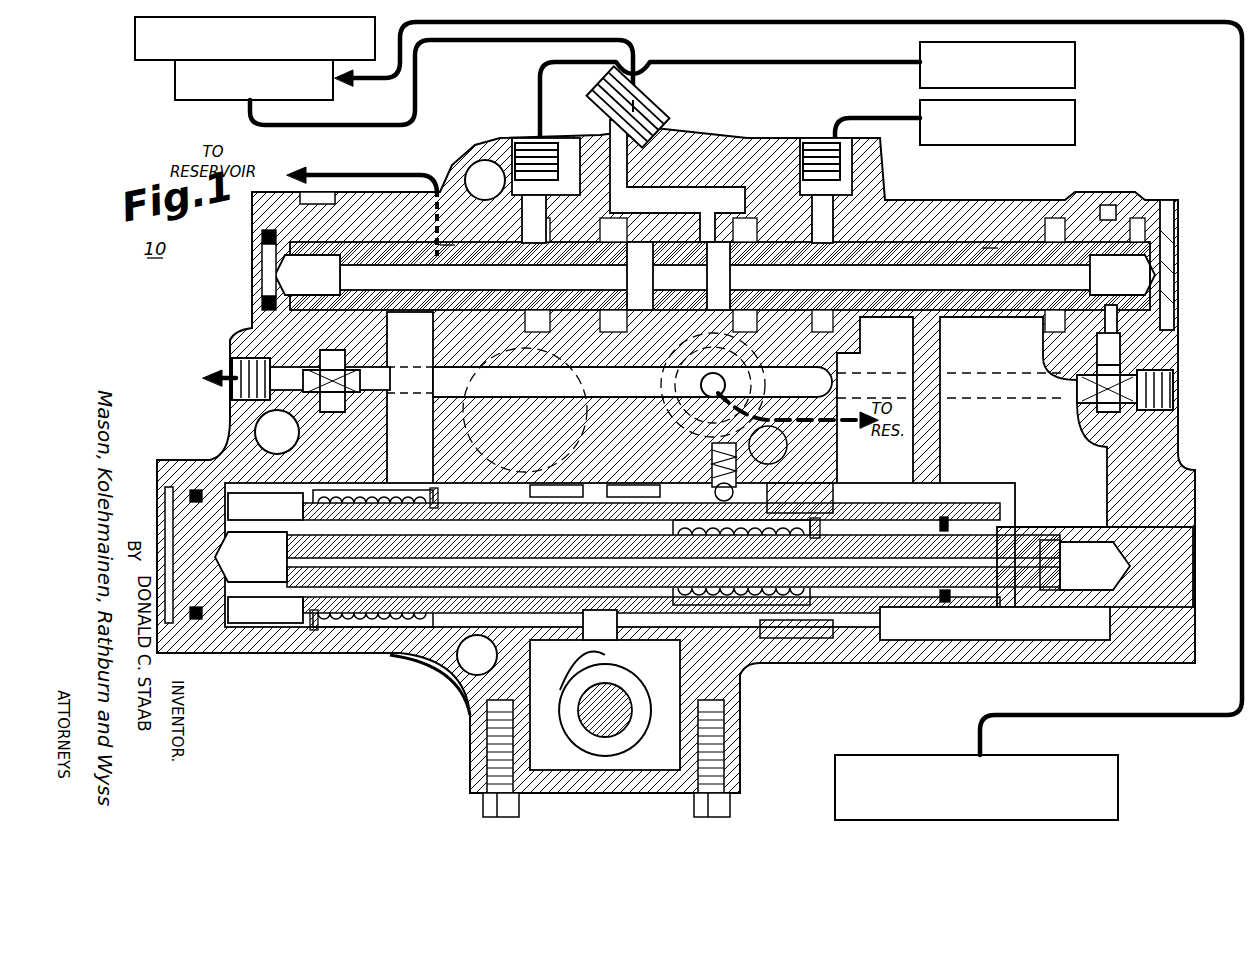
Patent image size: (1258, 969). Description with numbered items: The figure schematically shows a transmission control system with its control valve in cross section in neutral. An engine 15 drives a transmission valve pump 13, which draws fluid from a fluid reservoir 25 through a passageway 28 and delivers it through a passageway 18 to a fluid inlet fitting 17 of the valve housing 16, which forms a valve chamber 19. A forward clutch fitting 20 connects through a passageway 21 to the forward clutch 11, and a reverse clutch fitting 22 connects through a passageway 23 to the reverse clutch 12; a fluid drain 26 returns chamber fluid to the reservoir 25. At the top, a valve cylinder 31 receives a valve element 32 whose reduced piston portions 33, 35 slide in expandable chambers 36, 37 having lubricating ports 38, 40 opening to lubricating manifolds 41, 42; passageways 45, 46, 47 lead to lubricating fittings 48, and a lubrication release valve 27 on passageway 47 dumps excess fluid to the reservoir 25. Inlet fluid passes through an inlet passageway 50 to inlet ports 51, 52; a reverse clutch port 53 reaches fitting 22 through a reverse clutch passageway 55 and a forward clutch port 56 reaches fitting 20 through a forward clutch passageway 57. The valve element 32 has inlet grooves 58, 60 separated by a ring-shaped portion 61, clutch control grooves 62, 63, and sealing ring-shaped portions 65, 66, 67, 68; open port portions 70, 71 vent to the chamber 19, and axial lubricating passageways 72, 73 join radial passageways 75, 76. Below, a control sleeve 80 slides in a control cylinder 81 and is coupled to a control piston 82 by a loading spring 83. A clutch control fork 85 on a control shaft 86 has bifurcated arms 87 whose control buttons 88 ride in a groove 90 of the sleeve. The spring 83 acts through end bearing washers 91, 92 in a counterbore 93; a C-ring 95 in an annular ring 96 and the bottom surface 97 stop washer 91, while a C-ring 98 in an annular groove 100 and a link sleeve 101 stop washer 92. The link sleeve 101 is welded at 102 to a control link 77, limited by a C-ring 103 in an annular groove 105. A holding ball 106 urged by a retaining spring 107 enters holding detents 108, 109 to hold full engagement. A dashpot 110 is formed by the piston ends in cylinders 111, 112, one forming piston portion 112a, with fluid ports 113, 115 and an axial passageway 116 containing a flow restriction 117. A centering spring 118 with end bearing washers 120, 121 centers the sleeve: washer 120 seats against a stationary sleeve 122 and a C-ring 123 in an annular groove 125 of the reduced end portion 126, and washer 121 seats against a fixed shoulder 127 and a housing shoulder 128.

The forward clutch 11 is at (1075, 60).
The reverse clutch 12 is at (1075, 113).
The transmission valve pump 13 is at (176, 80).
The engine 15 is at (135, 36).
The valve housing 16 is at (250, 326).
The fluid inlet fitting 17 is at (638, 106).
The fluid conduit 18 is at (634, 41).
The valve chamber 19 is at (995, 463).
The forward clutch fitting 20 is at (460, 164).
The fluid conduit 21 is at (540, 62).
The reverse clutch fitting 22 is at (845, 164).
The fluid conduit 23 is at (878, 118).
The fluid reservoir 25 is at (1118, 780).
The fluid drain 26 is at (423, 223).
The lubrication release valve 27 is at (632, 403).
The fluid conduit 28 is at (1242, 139).
The valve cylinder 31 is at (900, 242).
The valve element 32 is at (908, 232).
The reduced diameter piston portion 33 is at (410, 399).
The reduced diameter piston portion 35 is at (1000, 250).
The expandable chamber 36 is at (262, 270).
The expandable chamber 37 is at (1152, 273).
The lubricating fluid ports 38 is at (262, 238).
The lubricating fluid ports 40 is at (1142, 227).
The annular lubricating manifold 41 is at (318, 192).
The annular lubricating manifold 42 is at (1108, 208).
The lubricating passageway 45 is at (246, 347).
The lubricating passageway 46 is at (1122, 357).
The lubricating passageway 47 is at (1140, 402).
The lubricating fitting 48 is at (240, 366).
The inlet passageway 50 is at (598, 132).
The inlet port 51 is at (608, 182).
The inlet port 52 is at (748, 186).
The reverse clutch port 53 is at (845, 198).
The reverse clutch fluid passageway 55 is at (852, 160).
The forward clutch port 56 is at (548, 208).
The forward clutch fluid passageway 57 is at (340, 190).
The annular groove 58 is at (622, 322).
The annular groove 60 is at (703, 240).
The ring-shaped portion 61 is at (690, 312).
The annular groove 62 is at (485, 180).
The annular groove 63 is at (862, 230).
The ring-shaped portion 65 is at (597, 322).
The ring-shaped portion 66 is at (758, 230).
The ring-shaped portion 67 is at (470, 322).
The ring-shaped portion 68 is at (876, 326).
The enlarged open port portion 70 is at (450, 234).
The enlarged open port portion 71 is at (990, 239).
The axial lubricating passageway 72 is at (348, 270).
The axial lubricating passageway 73 is at (1082, 278).
The radial lubricating passageway 75 is at (655, 315).
The radial lubricating passageway 76 is at (732, 240).
The control link 77 is at (942, 350).
The control sleeve 80 is at (822, 490).
The control cylinder 81 is at (836, 500).
The control piston 82 is at (984, 526).
The loading spring 83 is at (752, 672).
The clutch control fork 85 is at (582, 634).
The control shaft 86 is at (590, 722).
The bifurcated arms 87 is at (620, 628).
The control buttons 88 is at (608, 438).
The groove 90 is at (640, 485).
The end bearing washer 91 is at (728, 628).
The end bearing washer 92 is at (790, 640).
The counterbore 93 is at (762, 520).
The C-ring 95 is at (690, 442).
The annular ring 96 is at (675, 456).
The bottom surface 97 is at (708, 632).
The C-ring 98 is at (815, 600).
The annular groove 100 is at (822, 528).
The link sleeve 101 is at (885, 607).
The weld 102 is at (870, 533).
The C-ring 103 is at (946, 522).
The annular groove 105 is at (952, 598).
The holding ball 106 is at (768, 445).
The retaining spring 107 is at (712, 448).
The holding detent 108 is at (656, 632).
The holding detent 109 is at (818, 642).
The dashpot 110 is at (1030, 642).
The cylinder 111 is at (222, 545).
The cylinder 112 is at (1105, 566).
The piston portion 112a is at (293, 570).
The fluid port 113 is at (283, 503).
The fluid port 115 is at (1058, 540).
The axial passageway 116 is at (435, 665).
The flow restriction device 117 is at (1045, 592).
The centering spring 118 is at (340, 632).
The end bearing washer 120 is at (322, 632).
The end bearing washer 121 is at (432, 490).
The stationary sleeve 122 is at (232, 630).
The C-ring 123 is at (302, 628).
The annular groove 125 is at (300, 612).
The reduced diameter end portion 126 is at (348, 490).
The fixed shoulder 127 is at (442, 493).
The shoulder 128 is at (442, 470).